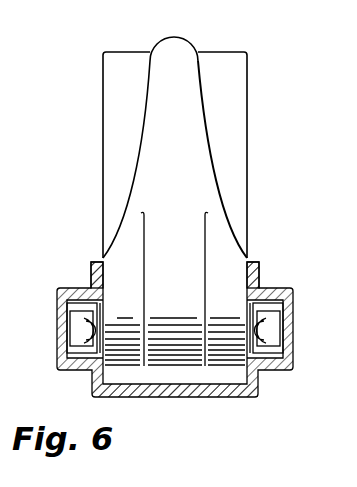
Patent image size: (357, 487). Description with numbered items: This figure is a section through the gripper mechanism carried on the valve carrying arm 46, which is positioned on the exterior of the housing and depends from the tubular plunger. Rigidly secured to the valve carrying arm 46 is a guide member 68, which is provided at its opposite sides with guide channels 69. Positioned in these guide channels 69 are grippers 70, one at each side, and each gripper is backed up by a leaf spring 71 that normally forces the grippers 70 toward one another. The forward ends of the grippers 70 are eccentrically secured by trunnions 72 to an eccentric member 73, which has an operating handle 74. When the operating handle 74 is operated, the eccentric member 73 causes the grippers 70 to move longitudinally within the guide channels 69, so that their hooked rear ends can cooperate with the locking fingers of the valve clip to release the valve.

The valve carrying arm 46 is at (110, 108).
The operating handle 74 is at (175, 147).
The guide member 68 is at (254, 397).
The guide channels 69 is at (60, 362).
The grippers 70 is at (84, 297).
The leaf spring 71 is at (74, 322).
The trunnions 72 is at (104, 322).
The eccentric member 73 is at (184, 302).